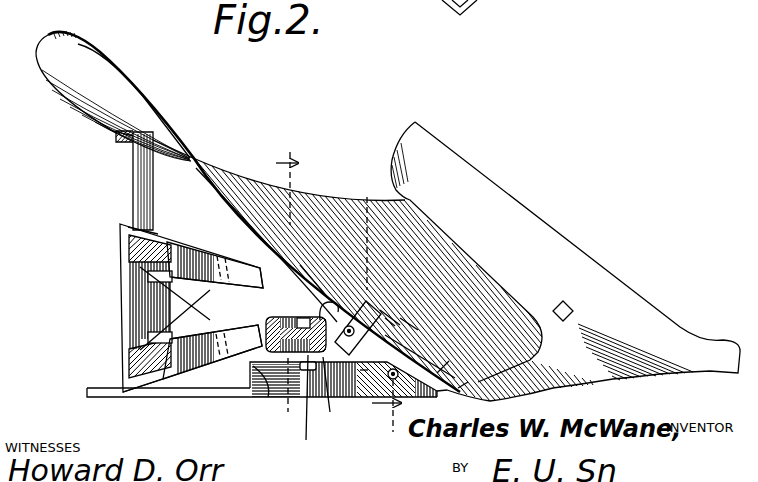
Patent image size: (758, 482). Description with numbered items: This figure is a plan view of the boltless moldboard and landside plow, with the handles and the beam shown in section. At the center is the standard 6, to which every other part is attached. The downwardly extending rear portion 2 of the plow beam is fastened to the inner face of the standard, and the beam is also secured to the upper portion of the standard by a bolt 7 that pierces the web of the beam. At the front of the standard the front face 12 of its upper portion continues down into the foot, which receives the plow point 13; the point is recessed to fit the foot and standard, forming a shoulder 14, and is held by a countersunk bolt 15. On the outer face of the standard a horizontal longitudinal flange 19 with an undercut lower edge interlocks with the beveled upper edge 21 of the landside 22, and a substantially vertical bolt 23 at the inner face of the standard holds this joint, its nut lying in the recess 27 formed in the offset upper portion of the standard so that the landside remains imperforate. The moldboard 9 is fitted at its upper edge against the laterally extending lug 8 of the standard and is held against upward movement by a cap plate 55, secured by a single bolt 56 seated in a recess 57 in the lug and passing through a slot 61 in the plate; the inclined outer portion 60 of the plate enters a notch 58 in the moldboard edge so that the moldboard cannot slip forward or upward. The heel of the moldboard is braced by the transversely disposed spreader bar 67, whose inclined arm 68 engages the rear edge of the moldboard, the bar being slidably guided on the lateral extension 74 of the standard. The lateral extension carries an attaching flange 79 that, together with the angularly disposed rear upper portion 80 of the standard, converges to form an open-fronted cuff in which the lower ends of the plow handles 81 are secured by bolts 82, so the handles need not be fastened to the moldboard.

The rear portion 2 is at (266, 322).
The standard 6 is at (303, 284).
The bolt 7 is at (349, 318).
The laterally extending lug 8 is at (331, 307).
The moldboard 9 is at (132, 80).
The front face 12 is at (437, 373).
The plow point 13 is at (543, 218).
The shoulder 14 is at (460, 387).
The bolt 15 is at (568, 301).
The horizontal longitudinal flange 19 is at (278, 398).
The beveled upper edge 21 is at (259, 396).
The landside 22 is at (118, 384).
The vertical bolt 23 is at (391, 380).
The recess 27 is at (365, 368).
The cap plate 55 is at (393, 335).
The bolt 56 is at (418, 328).
The recess 57 is at (376, 327).
The notch 58 is at (404, 322).
The outer portion 60 is at (392, 322).
The slot 61 is at (355, 343).
The spreader bar 67 is at (134, 188).
The arm 68 is at (123, 143).
The lateral extension 74 is at (122, 320).
The attaching flange 79 is at (150, 234).
The rear upper portion 80 is at (148, 385).
The plow handles 81 is at (135, 248).
The bolts 82 is at (150, 285).